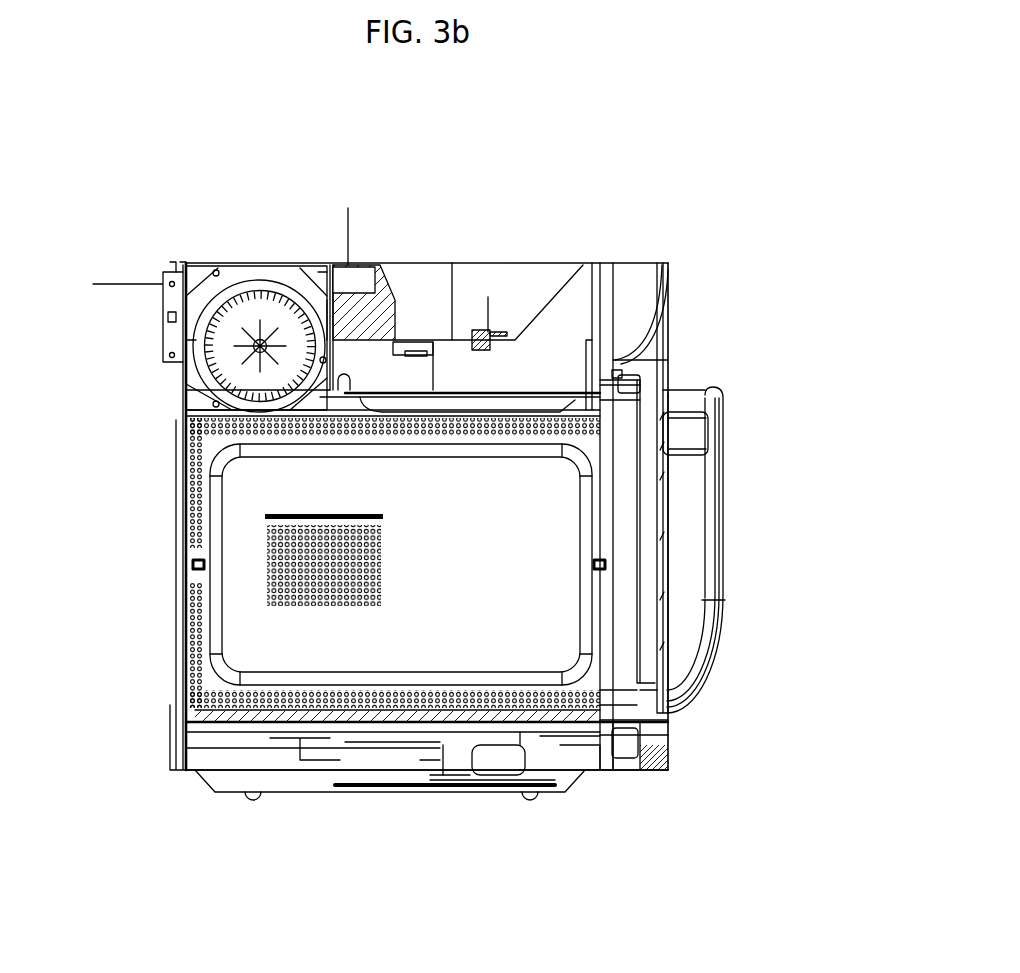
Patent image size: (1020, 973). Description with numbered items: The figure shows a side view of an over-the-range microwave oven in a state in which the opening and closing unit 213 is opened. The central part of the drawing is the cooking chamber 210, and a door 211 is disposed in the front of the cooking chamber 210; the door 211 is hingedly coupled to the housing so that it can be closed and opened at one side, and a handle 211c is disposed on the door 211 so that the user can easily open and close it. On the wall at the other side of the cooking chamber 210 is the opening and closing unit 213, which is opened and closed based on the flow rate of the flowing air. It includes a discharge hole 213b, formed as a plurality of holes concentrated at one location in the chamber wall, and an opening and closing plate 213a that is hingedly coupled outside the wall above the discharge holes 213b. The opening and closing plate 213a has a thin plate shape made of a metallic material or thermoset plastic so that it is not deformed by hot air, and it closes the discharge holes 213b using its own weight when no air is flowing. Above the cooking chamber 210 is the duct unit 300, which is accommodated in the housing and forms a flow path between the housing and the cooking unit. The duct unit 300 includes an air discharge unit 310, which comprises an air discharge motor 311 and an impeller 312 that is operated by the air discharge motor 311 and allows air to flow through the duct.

The cooking chamber 210 is at (483, 642).
The door 211 is at (650, 511).
The handle 211c is at (722, 527).
The opening and closing unit 213 is at (90, 492).
The opening and closing plate 213a is at (280, 513).
The discharge hole 213b is at (275, 599).
The duct unit 300 is at (464, 292).
The air discharge unit 310 is at (351, 178).
The air discharge motor 311 is at (237, 282).
The impeller 312 is at (270, 333).